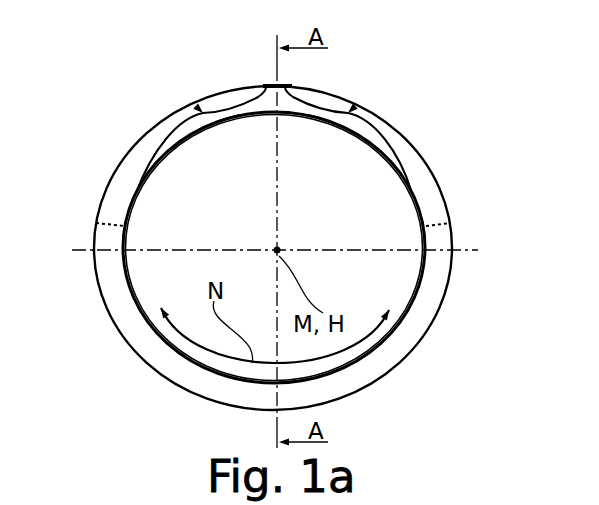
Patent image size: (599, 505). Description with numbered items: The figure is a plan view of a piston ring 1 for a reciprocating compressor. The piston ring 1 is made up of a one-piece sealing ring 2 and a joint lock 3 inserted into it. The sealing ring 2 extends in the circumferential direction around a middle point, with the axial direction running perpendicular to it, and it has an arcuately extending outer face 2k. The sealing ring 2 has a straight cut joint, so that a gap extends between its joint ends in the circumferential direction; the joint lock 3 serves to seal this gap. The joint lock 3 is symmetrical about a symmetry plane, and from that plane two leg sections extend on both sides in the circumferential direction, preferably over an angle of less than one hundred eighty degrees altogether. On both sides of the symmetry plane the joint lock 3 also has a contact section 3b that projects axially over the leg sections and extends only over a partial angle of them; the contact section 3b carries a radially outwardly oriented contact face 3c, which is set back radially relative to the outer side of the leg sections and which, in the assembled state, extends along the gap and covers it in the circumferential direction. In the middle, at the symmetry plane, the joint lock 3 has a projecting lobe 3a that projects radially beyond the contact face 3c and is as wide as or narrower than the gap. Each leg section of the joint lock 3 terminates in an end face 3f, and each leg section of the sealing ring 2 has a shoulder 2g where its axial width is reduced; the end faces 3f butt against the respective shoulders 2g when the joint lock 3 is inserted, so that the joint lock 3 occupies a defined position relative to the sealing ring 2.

The piston ring 1 is at (440, 97).
The sealing ring 2 is at (428, 175).
The outer face 2k is at (449, 203).
The shoulder 2g is at (98, 228).
The joint lock 3 is at (287, 106).
The projecting lobe 3a is at (266, 86).
The contact section 3b is at (203, 127).
The contact face 3c is at (203, 112).
The end face 3f is at (117, 230).